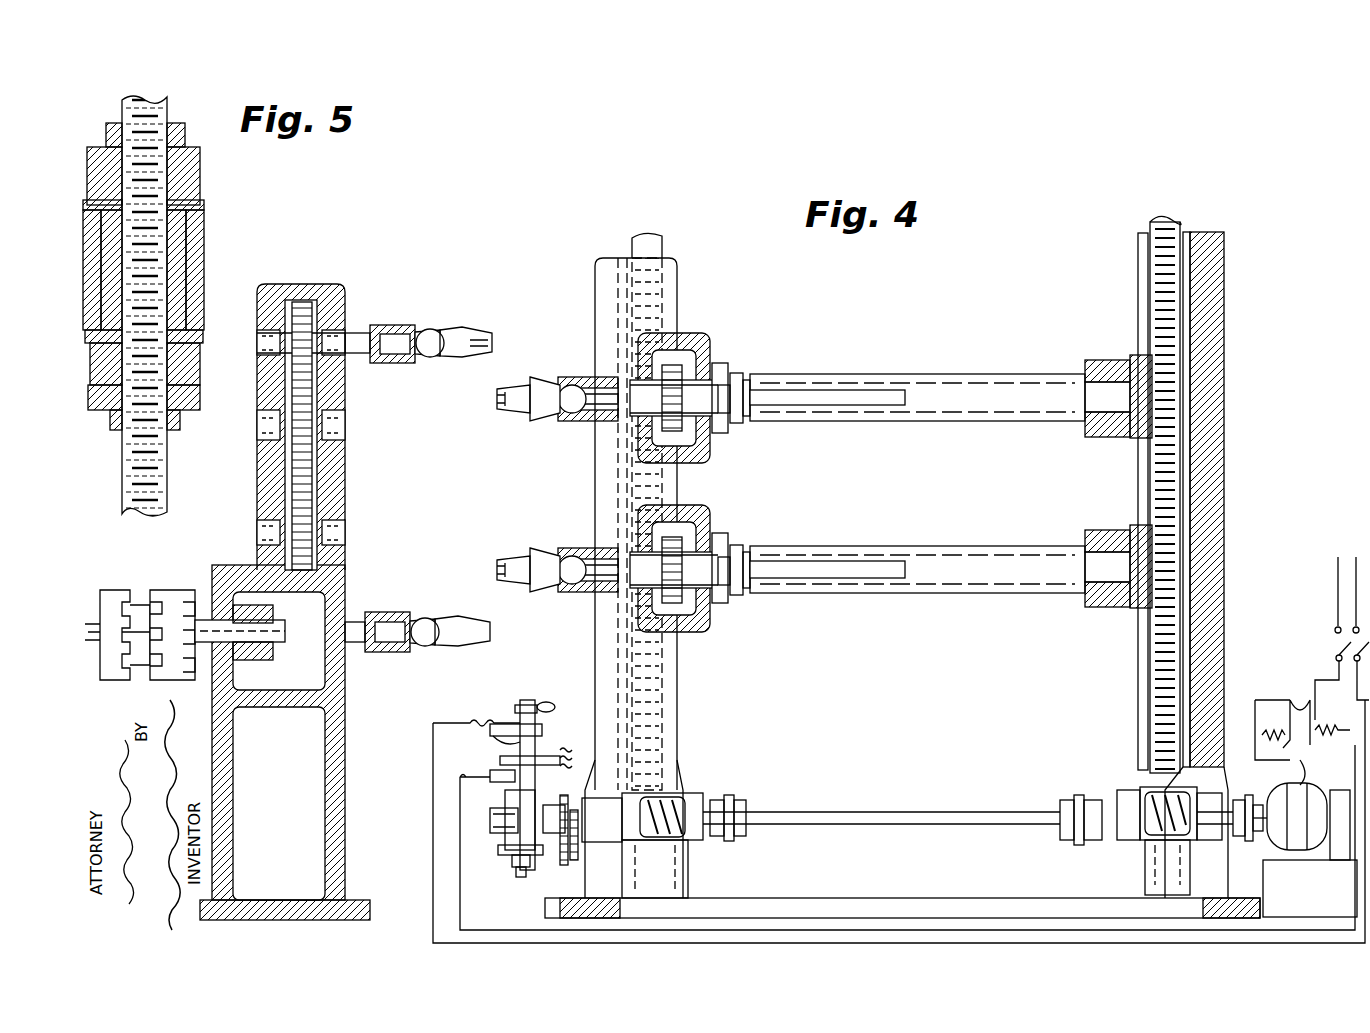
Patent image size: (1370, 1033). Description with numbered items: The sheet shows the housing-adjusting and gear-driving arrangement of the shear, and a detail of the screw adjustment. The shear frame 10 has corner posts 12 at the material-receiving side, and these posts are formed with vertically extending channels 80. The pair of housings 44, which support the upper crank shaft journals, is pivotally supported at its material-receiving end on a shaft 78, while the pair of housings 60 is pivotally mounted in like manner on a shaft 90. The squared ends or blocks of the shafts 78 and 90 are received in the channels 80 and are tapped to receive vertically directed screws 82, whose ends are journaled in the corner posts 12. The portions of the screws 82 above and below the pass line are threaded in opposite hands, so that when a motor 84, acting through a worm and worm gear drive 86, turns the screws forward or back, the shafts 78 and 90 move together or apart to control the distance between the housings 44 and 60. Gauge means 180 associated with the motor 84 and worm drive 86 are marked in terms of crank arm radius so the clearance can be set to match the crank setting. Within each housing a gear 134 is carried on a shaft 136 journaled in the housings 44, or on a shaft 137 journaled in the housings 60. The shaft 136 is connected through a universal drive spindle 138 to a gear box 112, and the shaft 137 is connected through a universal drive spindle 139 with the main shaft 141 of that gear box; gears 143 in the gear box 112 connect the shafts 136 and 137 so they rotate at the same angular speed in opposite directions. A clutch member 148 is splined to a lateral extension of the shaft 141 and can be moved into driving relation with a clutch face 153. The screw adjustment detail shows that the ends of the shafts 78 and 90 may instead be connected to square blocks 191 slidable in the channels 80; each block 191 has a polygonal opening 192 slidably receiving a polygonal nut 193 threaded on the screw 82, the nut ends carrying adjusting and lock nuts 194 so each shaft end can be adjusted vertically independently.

In FIG. 4, the shear frame 10 is at (874, 889).
In FIG. 4, the corner posts 12 is at (677, 318).
In FIG. 4, the housings 44 is at (1085, 362).
In FIG. 4, the housings 60 is at (1085, 607).
In FIG. 4, the shaft 78 is at (985, 412).
In FIG. 4, the channels 80 is at (1215, 294).
In FIG. 5, the screws 82 is at (165, 502).
In FIG. 4, the screws 82 is at (660, 258).
In FIG. 4, the motor 84 is at (1280, 792).
In FIG. 4, the worm and worm gear drive 86 is at (665, 802).
In FIG. 4, the shaft 90 is at (975, 557).
In FIG. 4, the gear box 112 is at (345, 782).
In FIG. 4, the gears 134 is at (712, 452).
In FIG. 4, the shaft 136 is at (905, 396).
In FIG. 4, the shaft 137 is at (905, 568).
In FIG. 4, the universal drive spindle 138 is at (505, 377).
In FIG. 4, the universal drive spindle 139 is at (497, 592).
In FIG. 4, the main shaft 141 is at (330, 622).
In FIG. 4, the gears 143 is at (310, 525).
In FIG. 4, the clutch member 148 is at (114, 598).
In FIG. 4, the clutch face 153 is at (174, 598).
In FIG. 4, the gauge means 180 is at (512, 720).
In FIG. 5, the square blocks 191 is at (205, 232).
In FIG. 5, the polygonal opening 192 is at (205, 312).
In FIG. 5, the polygonal nut 193 is at (197, 264).
In FIG. 5, the adjusting and lock nuts 194 is at (200, 180).